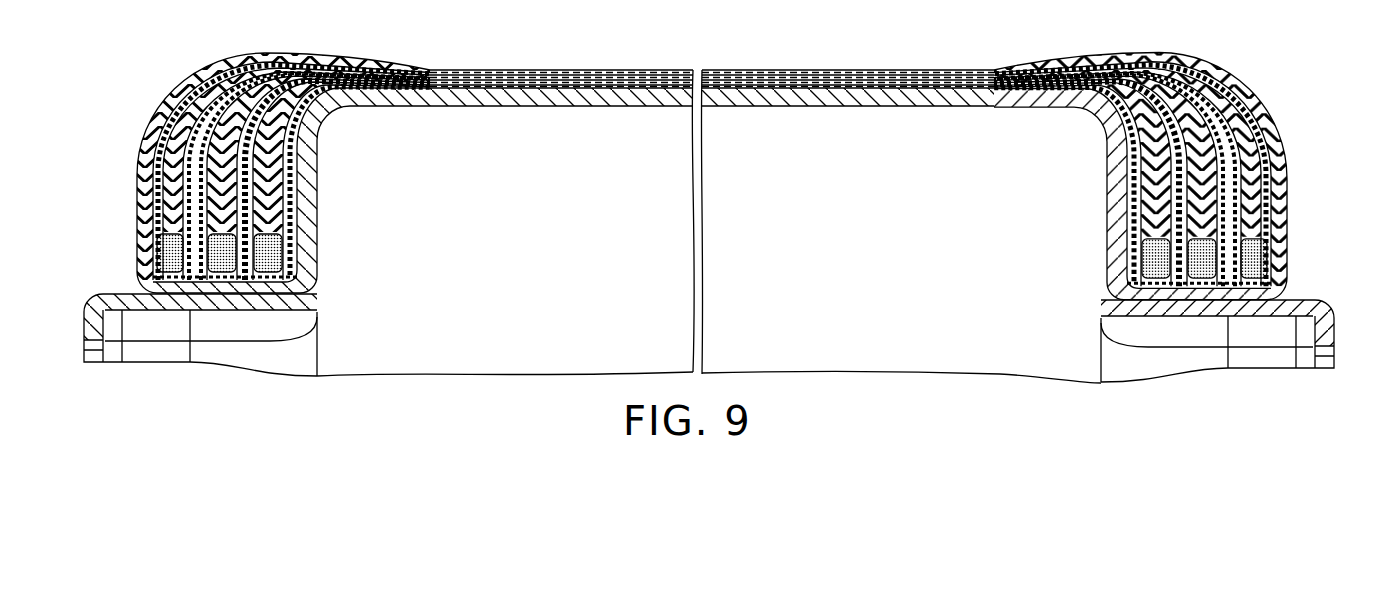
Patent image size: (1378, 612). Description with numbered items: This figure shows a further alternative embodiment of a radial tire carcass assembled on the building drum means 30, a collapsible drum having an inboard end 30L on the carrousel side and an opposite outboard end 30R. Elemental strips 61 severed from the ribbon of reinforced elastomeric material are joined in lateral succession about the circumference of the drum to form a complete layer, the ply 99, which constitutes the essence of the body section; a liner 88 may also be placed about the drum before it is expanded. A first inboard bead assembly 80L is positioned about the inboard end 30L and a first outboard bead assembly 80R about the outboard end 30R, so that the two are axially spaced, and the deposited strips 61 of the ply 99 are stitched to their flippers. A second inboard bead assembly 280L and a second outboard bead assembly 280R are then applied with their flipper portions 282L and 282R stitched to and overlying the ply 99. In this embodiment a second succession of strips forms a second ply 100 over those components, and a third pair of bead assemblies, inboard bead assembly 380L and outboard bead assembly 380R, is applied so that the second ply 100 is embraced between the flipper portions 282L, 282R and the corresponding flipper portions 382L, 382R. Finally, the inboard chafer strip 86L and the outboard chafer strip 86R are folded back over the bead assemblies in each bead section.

The second ply 100 is at (543, 71).
The building drum means 30 is at (368, 99).
The inboard end of the drum 30L is at (112, 355).
The outboard end of the drum 30R is at (1330, 326).
The elemental strips 61 is at (147, 305).
The first inboard bead assembly 80L is at (292, 204).
The outboard bead assembly 80R is at (1133, 253).
The inboard chafer strip 86L is at (294, 286).
The outboard chafer strip 86R is at (1126, 288).
The liner 88 is at (533, 90).
The ply 99 is at (580, 86).
The second inboard bead assembly 280L is at (227, 284).
The second outboard bead assembly 280R is at (1201, 288).
The flipper portion 282L is at (233, 146).
The flipper portion 282R is at (1197, 137).
The third inboard bead assembly 380L is at (147, 241).
The third outboard bead assembly 380R is at (1271, 218).
The flipper portion 382L is at (175, 126).
The flipper portion 382R is at (1250, 130).